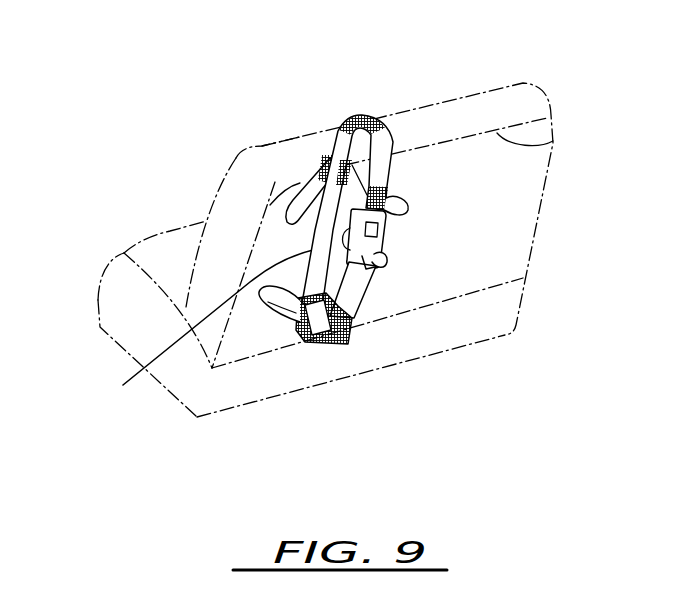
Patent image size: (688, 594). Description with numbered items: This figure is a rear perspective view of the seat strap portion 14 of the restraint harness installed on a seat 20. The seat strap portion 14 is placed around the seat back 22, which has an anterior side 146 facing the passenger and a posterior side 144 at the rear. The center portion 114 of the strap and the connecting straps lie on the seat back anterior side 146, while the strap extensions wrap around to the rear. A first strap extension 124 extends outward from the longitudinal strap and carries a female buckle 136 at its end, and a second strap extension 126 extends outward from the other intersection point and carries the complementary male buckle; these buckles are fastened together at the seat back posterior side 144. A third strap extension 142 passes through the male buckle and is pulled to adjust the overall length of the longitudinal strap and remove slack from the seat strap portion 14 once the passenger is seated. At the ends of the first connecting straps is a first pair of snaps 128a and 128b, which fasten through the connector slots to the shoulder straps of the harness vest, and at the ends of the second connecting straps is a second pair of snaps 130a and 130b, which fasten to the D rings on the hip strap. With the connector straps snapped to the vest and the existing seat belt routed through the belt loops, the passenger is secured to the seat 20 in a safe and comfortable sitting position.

The seat strap portion 14 is at (395, 80).
The seat 20 is at (100, 303).
The seat back 22 is at (504, 92).
The center portion 114 is at (196, 327).
The first strap extension 124 is at (387, 184).
The second strap extension 126 is at (360, 303).
The snap 128a is at (391, 211).
The snap 128b is at (284, 218).
The snap 130a is at (383, 260).
The snap 130b is at (261, 298).
The female buckle 136 is at (381, 236).
The third strap extension 142 is at (371, 266).
The posterior side 144 is at (553, 141).
The anterior side 146 is at (280, 140).